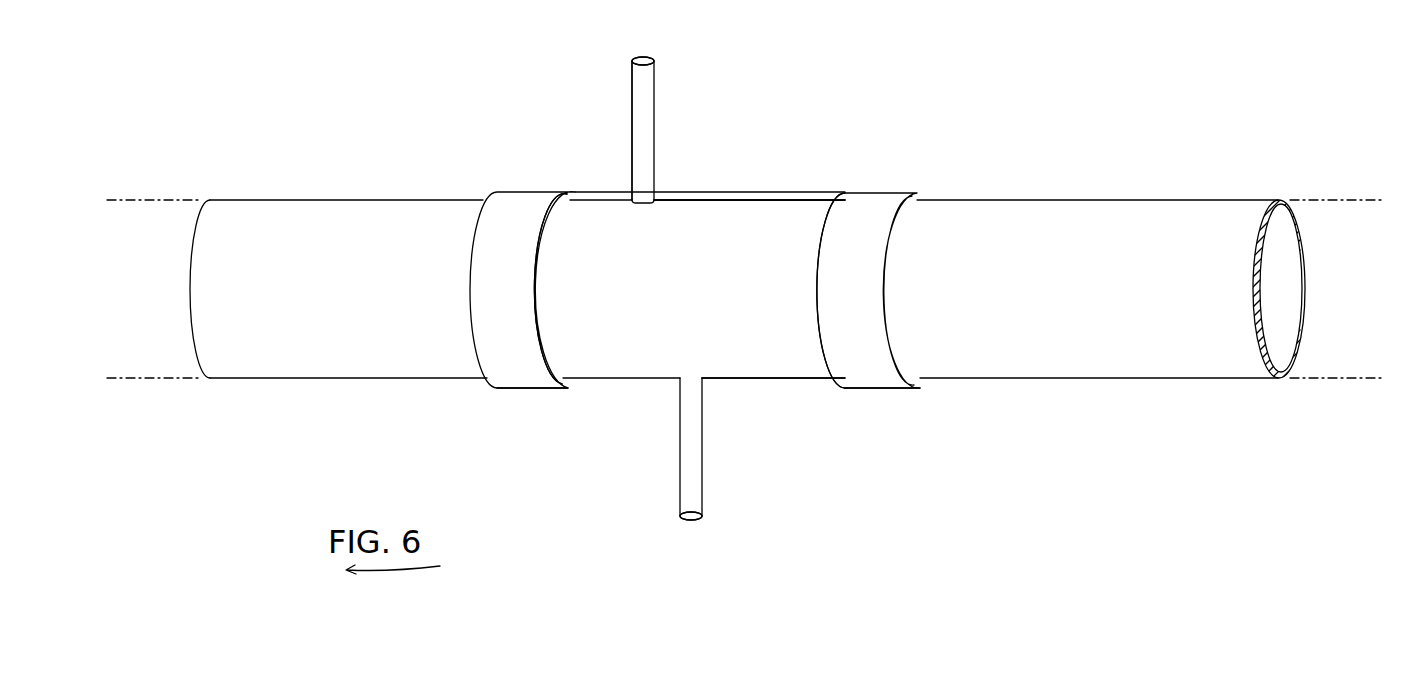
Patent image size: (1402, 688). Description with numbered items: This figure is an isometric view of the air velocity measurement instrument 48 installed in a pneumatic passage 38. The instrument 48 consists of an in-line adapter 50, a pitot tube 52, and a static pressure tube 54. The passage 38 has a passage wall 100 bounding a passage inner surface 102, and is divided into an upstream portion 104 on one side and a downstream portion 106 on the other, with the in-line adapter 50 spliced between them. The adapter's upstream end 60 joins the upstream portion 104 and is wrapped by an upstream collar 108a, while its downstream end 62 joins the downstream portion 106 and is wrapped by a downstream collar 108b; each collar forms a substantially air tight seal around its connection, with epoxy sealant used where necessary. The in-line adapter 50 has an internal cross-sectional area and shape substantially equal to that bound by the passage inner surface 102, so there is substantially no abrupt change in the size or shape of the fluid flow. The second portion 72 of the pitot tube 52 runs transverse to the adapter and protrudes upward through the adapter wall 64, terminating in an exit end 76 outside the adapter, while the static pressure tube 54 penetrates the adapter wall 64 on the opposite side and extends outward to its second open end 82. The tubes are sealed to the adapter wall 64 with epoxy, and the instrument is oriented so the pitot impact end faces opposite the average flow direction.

The passage 38 is at (368, 182).
The air velocity measurement instrument 48 is at (787, 149).
The in-line adapter 50 is at (692, 217).
The pitot tube 52 is at (667, 116).
The static pressure tube 54 is at (715, 458).
The upstream end 60 is at (812, 306).
The downstream end 62 is at (567, 382).
The adapter wall 64 is at (760, 250).
The second portion 72 is at (632, 139).
The exit end 76 is at (650, 58).
The second open end 82 is at (692, 521).
The passage wall 100 is at (346, 353).
The passage inner surface 102 is at (1276, 346).
The upstream portion 104 is at (940, 305).
The downstream portion 106 is at (450, 310).
The upstream collar 108a is at (880, 390).
The downstream collar 108b is at (512, 390).